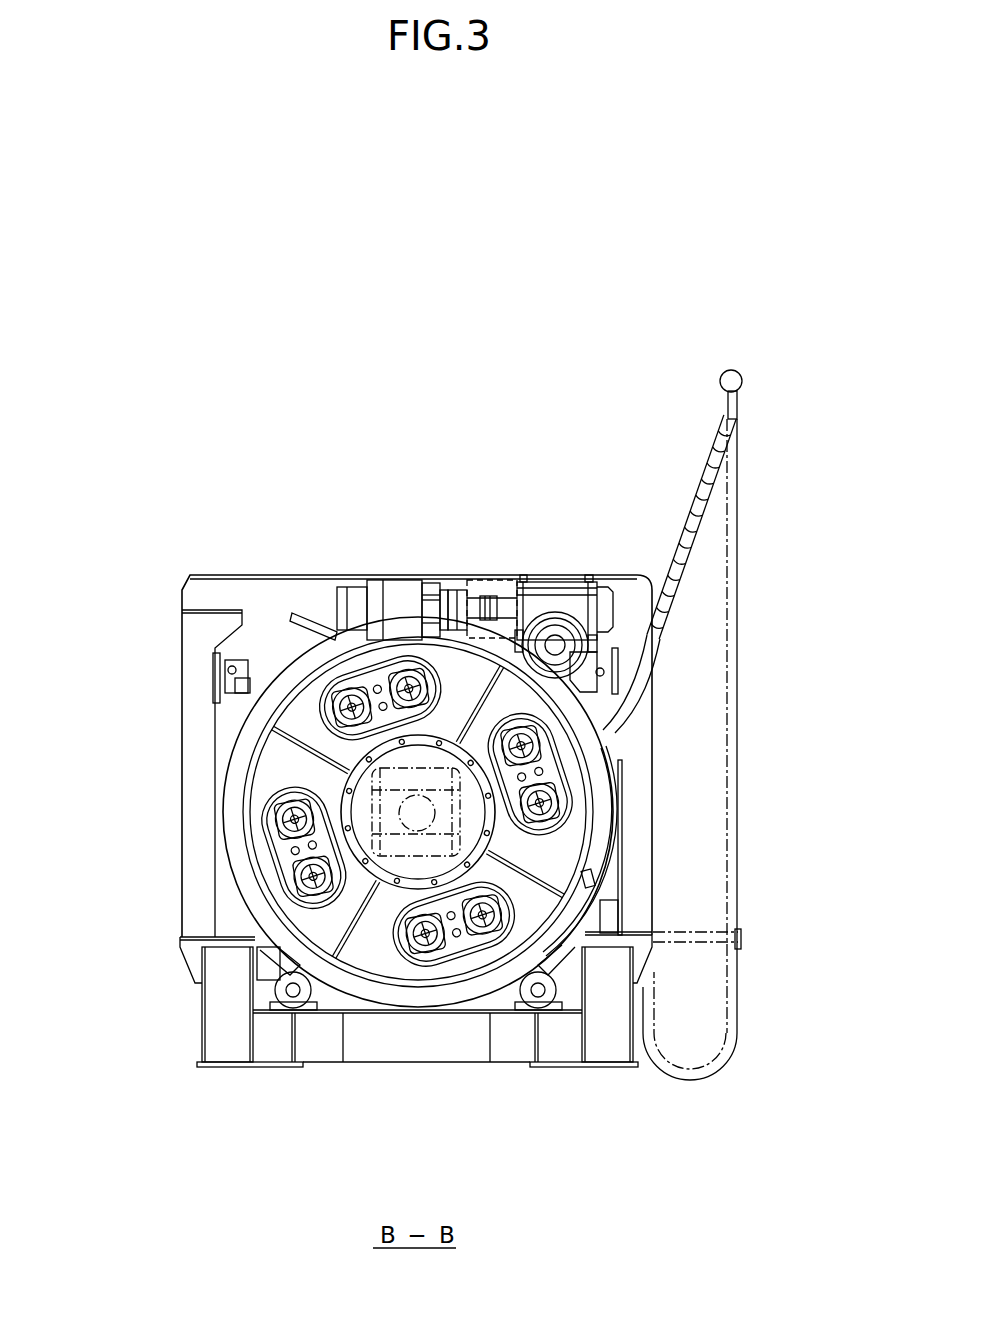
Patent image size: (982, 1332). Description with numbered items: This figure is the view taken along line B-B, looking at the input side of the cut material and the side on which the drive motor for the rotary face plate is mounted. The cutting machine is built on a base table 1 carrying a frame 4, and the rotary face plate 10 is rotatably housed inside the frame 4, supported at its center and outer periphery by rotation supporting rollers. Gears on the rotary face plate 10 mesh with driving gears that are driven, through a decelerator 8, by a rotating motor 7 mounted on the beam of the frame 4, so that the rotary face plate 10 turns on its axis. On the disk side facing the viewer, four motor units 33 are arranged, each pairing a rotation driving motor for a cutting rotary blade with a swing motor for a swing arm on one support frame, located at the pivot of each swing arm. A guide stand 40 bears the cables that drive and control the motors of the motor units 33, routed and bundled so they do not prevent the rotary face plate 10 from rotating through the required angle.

The base table 1 is at (208, 1042).
The frame 4 is at (243, 566).
The rotating motor 7 is at (402, 590).
The decelerator 8 is at (559, 615).
The rotary face plate 10 is at (237, 725).
The motor unit 33 is at (343, 673).
The guide stand 40 is at (730, 448).